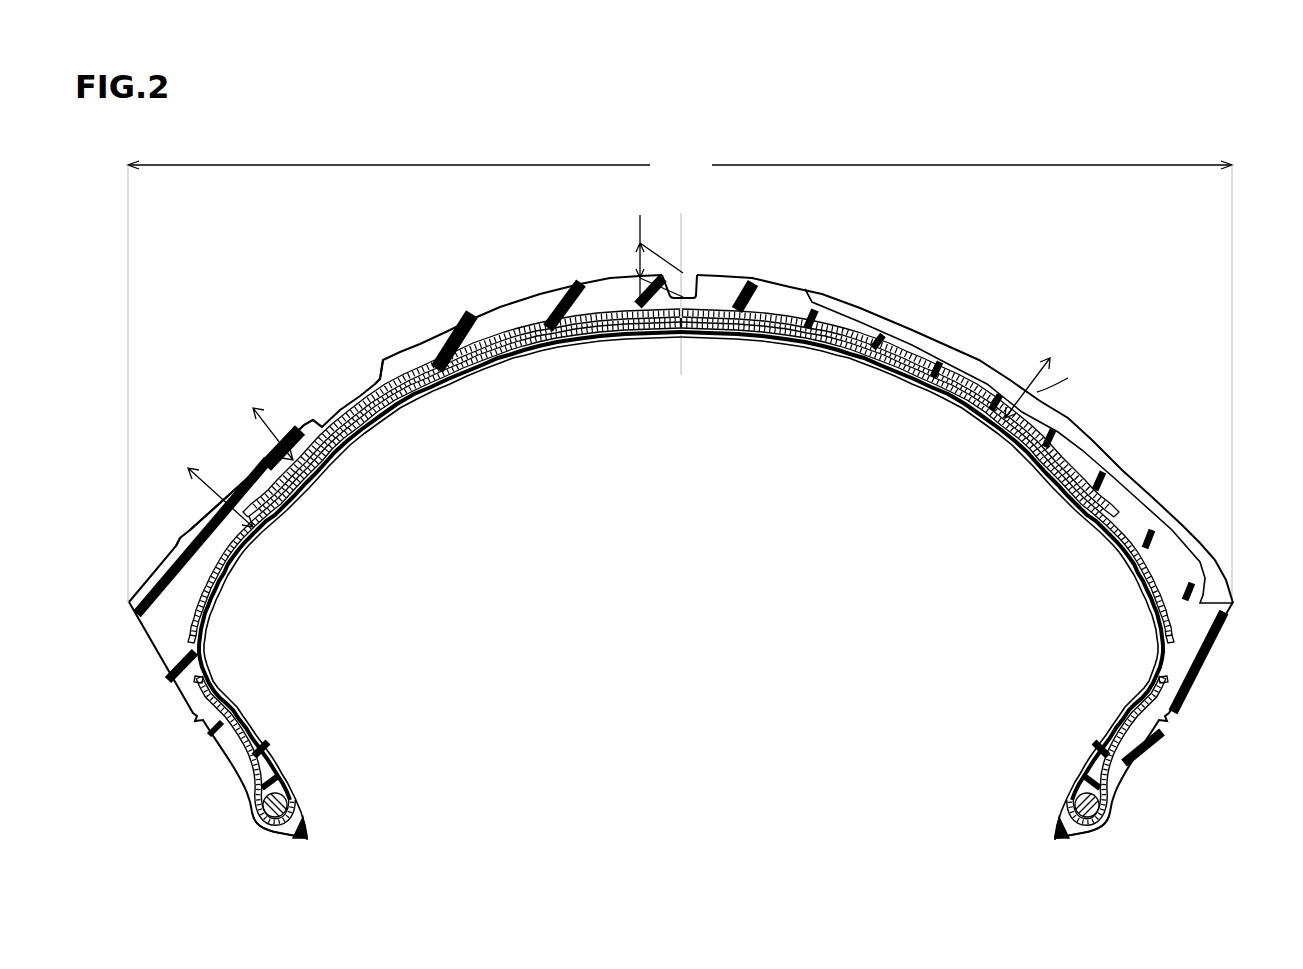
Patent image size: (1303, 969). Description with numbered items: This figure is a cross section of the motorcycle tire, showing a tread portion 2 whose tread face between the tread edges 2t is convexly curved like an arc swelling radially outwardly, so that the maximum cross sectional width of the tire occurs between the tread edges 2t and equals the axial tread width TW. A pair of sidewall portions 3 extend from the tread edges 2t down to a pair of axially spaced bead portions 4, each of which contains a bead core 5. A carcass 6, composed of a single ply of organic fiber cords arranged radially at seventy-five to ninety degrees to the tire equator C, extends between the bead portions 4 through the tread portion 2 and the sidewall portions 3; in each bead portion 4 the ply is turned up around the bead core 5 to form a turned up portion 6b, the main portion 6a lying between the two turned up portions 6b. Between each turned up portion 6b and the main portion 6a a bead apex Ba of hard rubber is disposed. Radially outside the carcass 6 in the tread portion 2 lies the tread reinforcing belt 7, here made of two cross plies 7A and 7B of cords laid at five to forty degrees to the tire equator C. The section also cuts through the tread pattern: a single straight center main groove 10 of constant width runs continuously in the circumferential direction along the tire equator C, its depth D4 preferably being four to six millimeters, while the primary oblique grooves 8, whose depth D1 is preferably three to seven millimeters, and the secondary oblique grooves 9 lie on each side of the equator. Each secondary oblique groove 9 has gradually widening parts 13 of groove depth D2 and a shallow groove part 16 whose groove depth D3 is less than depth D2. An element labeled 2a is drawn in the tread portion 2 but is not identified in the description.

The tread portion 2 is at (1045, 322).
The tread base boundary 2a is at (972, 347).
The tread edges 2t is at (128, 600).
The sidewall portions 3 is at (175, 722).
The bead portions 4 is at (243, 808).
The bead core 5 is at (282, 808).
The carcass 6 is at (1035, 630).
The main portion 6a is at (1163, 640).
The turned up portions 6b is at (1168, 677).
The tread reinforcing belt 7 is at (410, 583).
The cross ply 7A is at (320, 462).
The cross ply 7B is at (373, 432).
The primary oblique grooves 8 is at (855, 318).
The secondary oblique grooves 9 is at (343, 393).
The center main groove 10 is at (692, 272).
The gradually widening parts 13 is at (362, 380).
The shallow groove part 16 is at (257, 452).
The bead apex Ba is at (262, 762).
The tire equator C is at (681, 313).
The depth of primary oblique grooves D1 is at (1054, 388).
The groove depth of gradually widening part D2 is at (220, 473).
The groove depth of shallow groove part D3 is at (274, 417).
The depth of center main groove D4 is at (639, 257).
The tread width TW is at (680, 168).